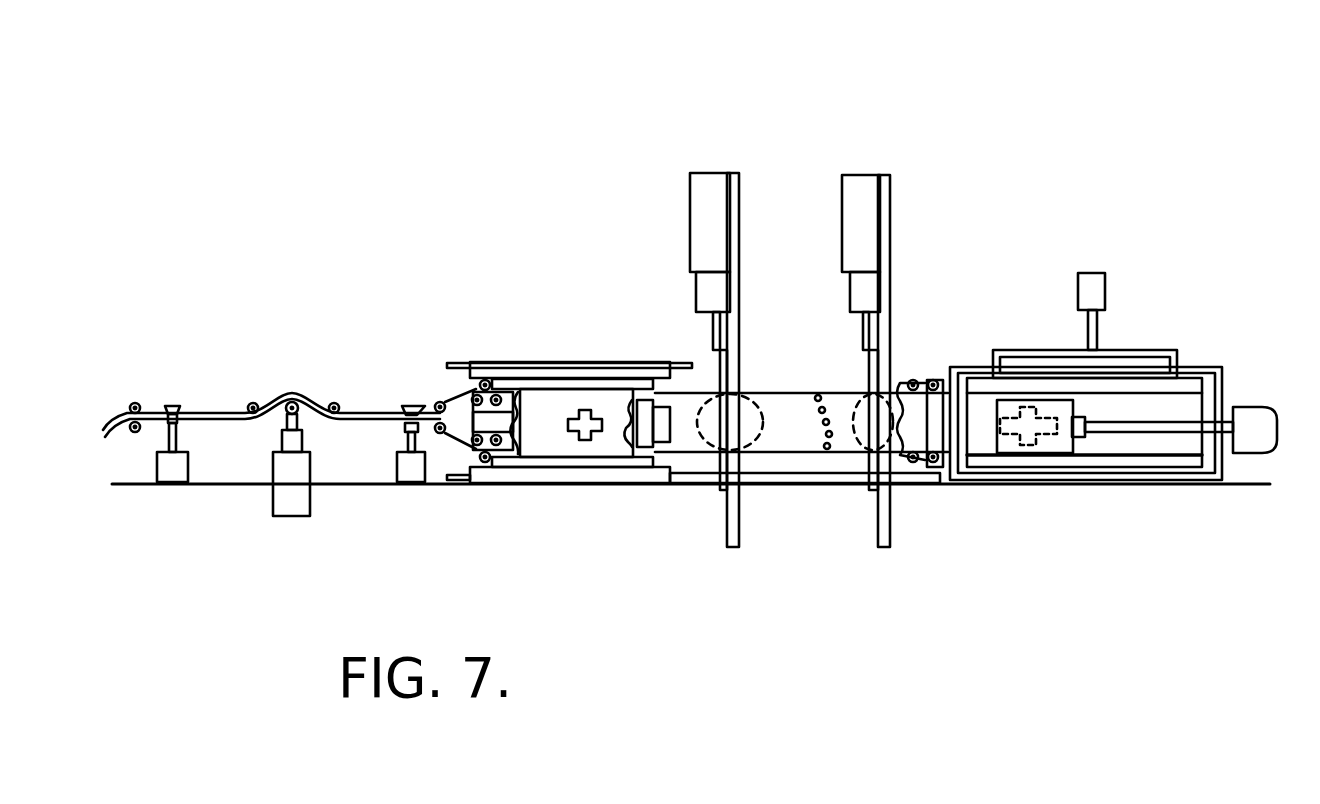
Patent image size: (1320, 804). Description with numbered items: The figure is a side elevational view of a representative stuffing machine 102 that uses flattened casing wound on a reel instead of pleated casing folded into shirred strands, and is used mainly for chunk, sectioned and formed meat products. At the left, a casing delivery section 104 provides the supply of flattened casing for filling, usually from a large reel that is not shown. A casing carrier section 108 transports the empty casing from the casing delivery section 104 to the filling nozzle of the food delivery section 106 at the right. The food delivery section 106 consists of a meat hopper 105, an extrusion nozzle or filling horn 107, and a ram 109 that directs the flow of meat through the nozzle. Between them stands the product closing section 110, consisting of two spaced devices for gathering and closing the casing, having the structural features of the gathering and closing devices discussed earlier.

The stuffing machine 102 is at (985, 155).
The casing delivery section 104 is at (245, 372).
The meat hopper 105 is at (1170, 410).
The food delivery section 106 is at (1030, 255).
The extrusion nozzle or filling horn 107 is at (915, 430).
The casing carrier section 108 is at (595, 352).
The ram 109 is at (1048, 445).
The product closing section 110 is at (860, 168).